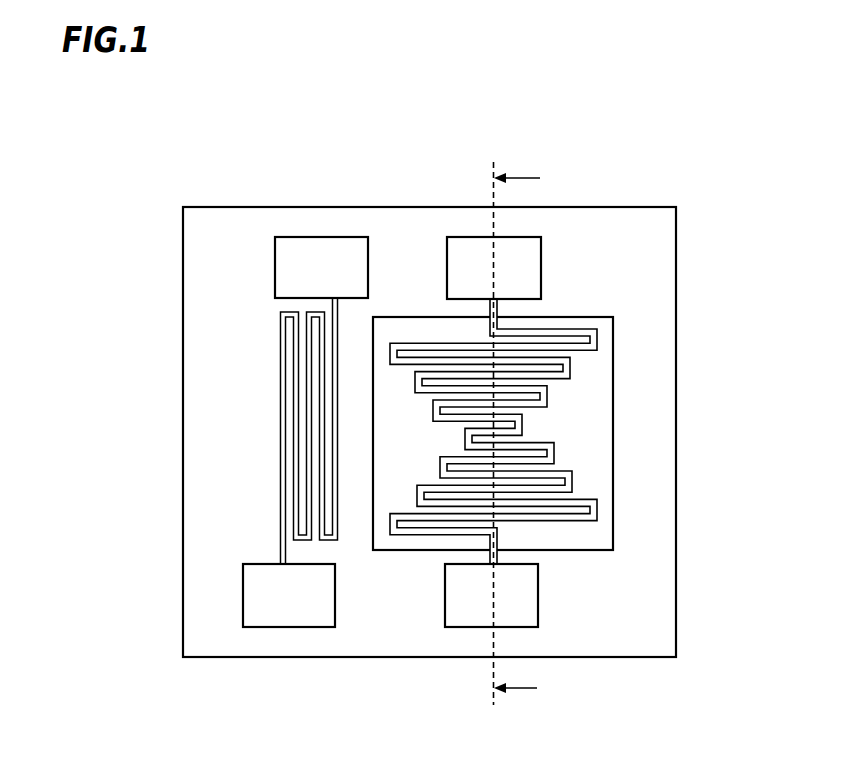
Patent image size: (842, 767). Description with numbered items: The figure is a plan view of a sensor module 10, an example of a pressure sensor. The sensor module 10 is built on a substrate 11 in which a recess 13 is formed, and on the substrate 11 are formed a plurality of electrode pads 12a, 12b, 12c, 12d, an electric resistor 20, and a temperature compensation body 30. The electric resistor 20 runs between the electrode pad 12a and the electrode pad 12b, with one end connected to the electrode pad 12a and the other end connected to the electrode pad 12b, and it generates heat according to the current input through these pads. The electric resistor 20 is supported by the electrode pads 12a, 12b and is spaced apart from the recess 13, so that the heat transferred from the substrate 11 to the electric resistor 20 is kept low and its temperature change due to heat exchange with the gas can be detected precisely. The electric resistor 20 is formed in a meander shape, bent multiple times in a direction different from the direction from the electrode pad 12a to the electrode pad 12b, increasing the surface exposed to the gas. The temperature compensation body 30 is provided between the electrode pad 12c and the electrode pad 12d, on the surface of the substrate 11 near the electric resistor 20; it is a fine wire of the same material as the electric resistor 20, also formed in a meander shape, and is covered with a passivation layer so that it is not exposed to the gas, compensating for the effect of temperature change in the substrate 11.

The sensor module 10 is at (228, 191).
The substrate 11 is at (183, 321).
The electrode pad 12a is at (541, 272).
The electrode pad 12b is at (538, 596).
The electrode pad 12c is at (243, 600).
The electrode pad 12d is at (275, 264).
The recess 13 is at (600, 396).
The electric resistor 20 is at (554, 464).
The temperature compensation body 30 is at (280, 425).